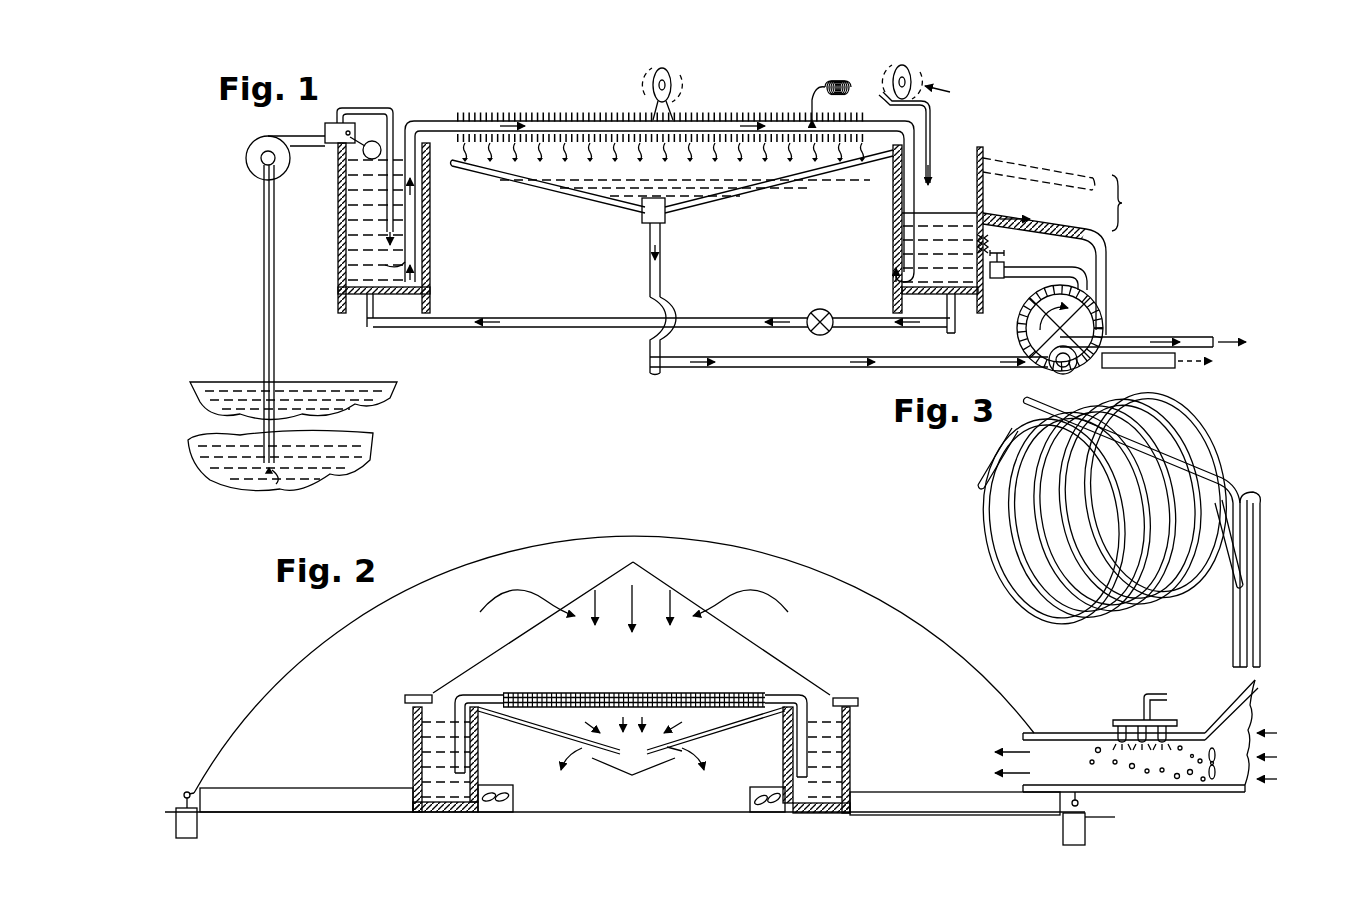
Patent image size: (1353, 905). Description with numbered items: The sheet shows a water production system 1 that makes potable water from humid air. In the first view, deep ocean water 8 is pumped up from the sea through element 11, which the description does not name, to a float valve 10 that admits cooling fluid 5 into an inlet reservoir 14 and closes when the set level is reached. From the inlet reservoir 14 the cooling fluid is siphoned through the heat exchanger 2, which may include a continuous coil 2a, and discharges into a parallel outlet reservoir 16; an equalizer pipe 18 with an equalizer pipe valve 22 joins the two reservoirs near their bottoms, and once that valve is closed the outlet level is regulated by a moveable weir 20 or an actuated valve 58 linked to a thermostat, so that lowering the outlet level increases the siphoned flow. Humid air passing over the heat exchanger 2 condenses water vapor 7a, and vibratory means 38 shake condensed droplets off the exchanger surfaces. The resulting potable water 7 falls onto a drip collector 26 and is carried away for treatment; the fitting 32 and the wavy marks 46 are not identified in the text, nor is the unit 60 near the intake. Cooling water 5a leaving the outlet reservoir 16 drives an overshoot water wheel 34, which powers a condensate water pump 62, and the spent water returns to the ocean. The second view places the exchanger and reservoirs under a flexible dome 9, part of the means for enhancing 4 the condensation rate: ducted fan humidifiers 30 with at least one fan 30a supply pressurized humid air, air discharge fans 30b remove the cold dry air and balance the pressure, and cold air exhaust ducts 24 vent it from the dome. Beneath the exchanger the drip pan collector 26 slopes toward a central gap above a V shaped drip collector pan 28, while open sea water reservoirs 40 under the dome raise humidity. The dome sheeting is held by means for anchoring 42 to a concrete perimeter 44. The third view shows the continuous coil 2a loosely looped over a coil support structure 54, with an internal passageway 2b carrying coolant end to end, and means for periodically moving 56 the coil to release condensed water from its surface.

In FIG. 1, the water production system 1 is at (972, 136).
In FIG. 1, the heat exchanger 2 is at (447, 120).
In FIG. 1, the continuous coil 2a is at (850, 82).
In FIG. 3, the continuous coil 2a is at (1210, 452).
In FIG. 3, the internal passageway 2b is at (976, 492).
In FIG. 2, the means for enhancing 4 is at (874, 578).
In FIG. 1, the cooling fluid 5 is at (355, 233).
In FIG. 2, the cooling fluid 5 is at (430, 755).
In FIG. 1, the cooling water 5a is at (350, 266).
In FIG. 1, the potable water 7 is at (1210, 337).
In FIG. 1, the water vapor 7a is at (457, 160).
In FIG. 1, the deep ocean water 8 is at (375, 460).
In FIG. 2, the dome 9 is at (722, 537).
In FIG. 1, the float valve 10 is at (333, 146).
In FIG. 1, the intake pipe 11 is at (263, 303).
In FIG. 1, the inlet reservoir 14 is at (338, 205).
In FIG. 2, the inlet reservoir 14 is at (412, 727).
In FIG. 1, the outlet reservoir 16 is at (892, 231).
In FIG. 2, the outlet reservoir 16 is at (850, 745).
In FIG. 1, the equalizer pipe 18 is at (525, 328).
In FIG. 1, the weir 20 is at (1061, 241).
In FIG. 1, the equalizer pipe valve 22 is at (814, 310).
In FIG. 2, the cold air exhaust ducts 24 is at (513, 800).
In FIG. 1, the drip pan collector 26 is at (742, 202).
In FIG. 2, the drip pan collector 26 is at (530, 719).
In FIG. 2, the V shaped drip collector pan 28 is at (653, 769).
In FIG. 2, the ducted fan humidifiers 30 is at (1101, 725).
In FIG. 2, the fan 30a is at (1225, 774).
In FIG. 2, the air discharge fan 30b is at (496, 815).
In FIG. 1, the collection box 32 is at (642, 212).
In FIG. 1, the water wheel 34 is at (1017, 330).
In FIG. 1, the vibratory means 38 is at (692, 62).
In FIG. 2, the open sea water reservoirs 40 is at (290, 787).
In FIG. 2, the means for anchoring 42 is at (184, 793).
In FIG. 2, the concrete perimeter 44 is at (175, 825).
In FIG. 1, the sea level 46 is at (392, 399).
In FIG. 3, the coil support structure 54 is at (1262, 588).
In FIG. 1, the means for periodically moving 56 is at (949, 93).
In FIG. 1, the actuated valve 58 is at (1012, 264).
In FIG. 1, the pump 60 is at (248, 150).
In FIG. 1, the condensate water pump 62 is at (1082, 371).